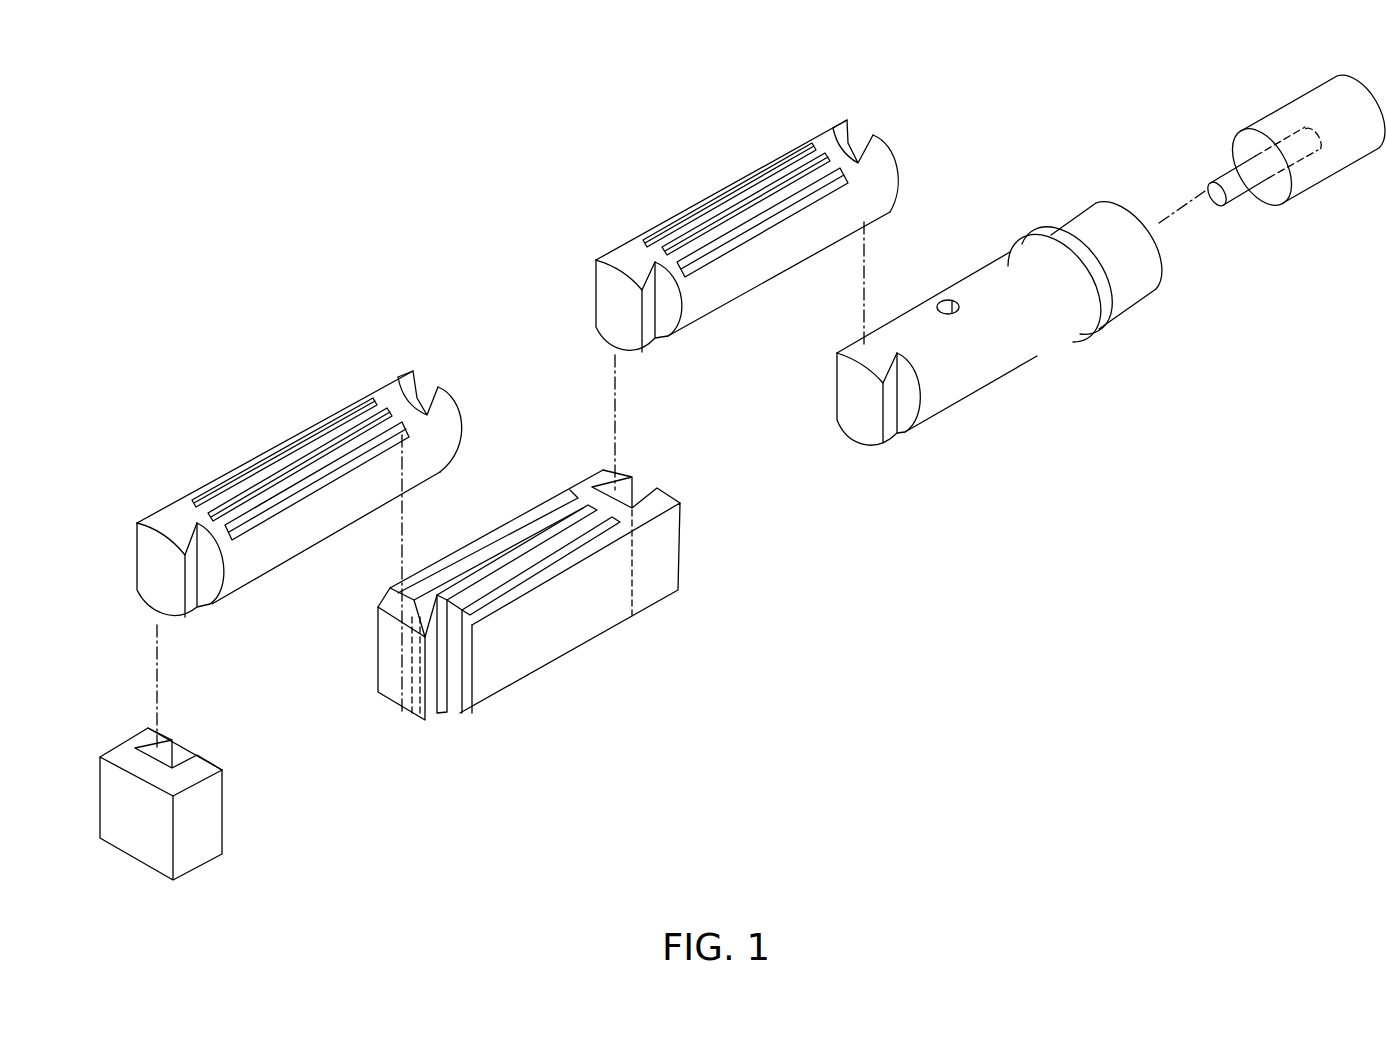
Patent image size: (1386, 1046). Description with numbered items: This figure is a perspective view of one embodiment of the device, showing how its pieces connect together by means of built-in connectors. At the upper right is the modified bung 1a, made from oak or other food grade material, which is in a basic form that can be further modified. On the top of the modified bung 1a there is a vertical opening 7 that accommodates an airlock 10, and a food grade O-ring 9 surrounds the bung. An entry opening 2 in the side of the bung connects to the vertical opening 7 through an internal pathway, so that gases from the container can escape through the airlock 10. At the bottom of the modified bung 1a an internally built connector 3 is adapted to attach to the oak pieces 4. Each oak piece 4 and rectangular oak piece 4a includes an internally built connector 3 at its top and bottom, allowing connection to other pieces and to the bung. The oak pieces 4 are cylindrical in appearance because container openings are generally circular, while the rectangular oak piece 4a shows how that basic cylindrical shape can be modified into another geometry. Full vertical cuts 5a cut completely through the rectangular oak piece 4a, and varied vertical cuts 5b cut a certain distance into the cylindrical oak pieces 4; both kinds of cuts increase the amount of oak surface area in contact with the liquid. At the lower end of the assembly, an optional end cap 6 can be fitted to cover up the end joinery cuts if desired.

The modified bung 1a is at (1002, 368).
The entry opening 2 is at (942, 305).
The internally built connector 3 is at (150, 578).
The oak piece 4 is at (277, 547).
The rectangular oak piece 4a is at (575, 638).
The full vertical cuts 5a is at (527, 520).
The varied vertical cuts 5b is at (345, 418).
The end cap 6 is at (207, 862).
The vertical opening 7 is at (1160, 250).
The O-ring 9 is at (1092, 322).
The airlock 10 is at (1297, 115).